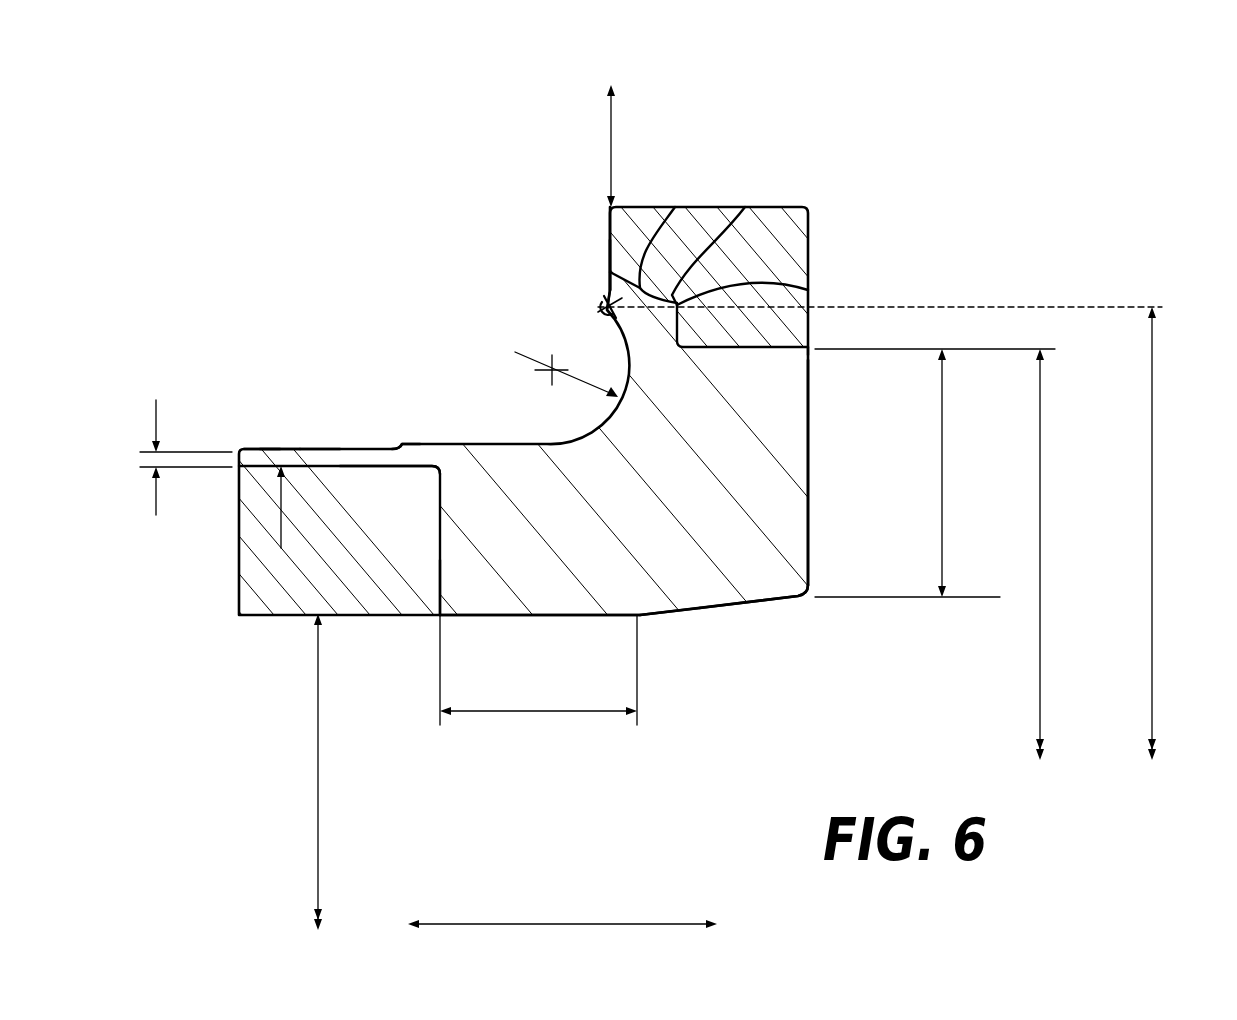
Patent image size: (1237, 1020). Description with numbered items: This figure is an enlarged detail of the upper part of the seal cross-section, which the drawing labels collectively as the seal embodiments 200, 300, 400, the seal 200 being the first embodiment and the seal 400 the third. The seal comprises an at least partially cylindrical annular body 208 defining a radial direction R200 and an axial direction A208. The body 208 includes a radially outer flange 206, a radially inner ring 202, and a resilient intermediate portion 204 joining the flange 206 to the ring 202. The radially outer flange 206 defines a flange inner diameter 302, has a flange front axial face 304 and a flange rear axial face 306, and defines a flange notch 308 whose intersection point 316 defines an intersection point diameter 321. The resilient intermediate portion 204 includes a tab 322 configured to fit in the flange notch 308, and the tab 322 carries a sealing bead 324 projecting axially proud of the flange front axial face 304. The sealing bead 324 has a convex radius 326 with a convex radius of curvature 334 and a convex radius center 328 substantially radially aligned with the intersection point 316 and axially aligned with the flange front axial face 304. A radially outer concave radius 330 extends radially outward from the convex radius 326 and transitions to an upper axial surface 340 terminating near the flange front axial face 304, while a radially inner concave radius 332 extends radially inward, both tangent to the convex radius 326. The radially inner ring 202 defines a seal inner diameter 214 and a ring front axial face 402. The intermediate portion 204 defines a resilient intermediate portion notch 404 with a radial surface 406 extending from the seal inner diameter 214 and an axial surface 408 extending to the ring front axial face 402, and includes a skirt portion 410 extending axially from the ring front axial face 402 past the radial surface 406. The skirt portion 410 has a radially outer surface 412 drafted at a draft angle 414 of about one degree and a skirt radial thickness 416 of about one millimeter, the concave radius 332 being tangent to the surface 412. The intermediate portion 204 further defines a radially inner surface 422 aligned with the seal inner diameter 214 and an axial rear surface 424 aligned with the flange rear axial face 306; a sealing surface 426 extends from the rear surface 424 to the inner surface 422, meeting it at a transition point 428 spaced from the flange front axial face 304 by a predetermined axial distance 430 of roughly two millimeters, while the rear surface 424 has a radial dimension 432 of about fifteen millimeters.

The seal 200 is at (575, 314).
The seal 300 is at (575, 314).
The seal 400 is at (736, 80).
The radially inner ring 202 is at (283, 598).
The resilient intermediate portion 204 is at (525, 596).
The radially outer flange 206 is at (795, 240).
The at least partially cylindrical annular body 208 is at (815, 183).
The seal inner diameter 214 is at (318, 790).
The flange inner diameter 302 is at (1040, 548).
The flange front axial face 304 is at (608, 228).
The flange rear axial face 306 is at (810, 265).
The flange notch 308 is at (745, 207).
The intersection point 316 is at (808, 290).
The intersection point diameter 321 is at (1152, 518).
The tab 322 is at (675, 207).
The sealing bead 324 is at (600, 312).
The convex radius 326 is at (600, 300).
The convex radius center 328 is at (600, 332).
The radially outer concave radius 330 is at (607, 278).
The radially inner concave radius 332 is at (535, 370).
The convex radius of curvature 334 is at (600, 306).
The upper axial surface 340 is at (605, 247).
The ring front axial face 402 is at (243, 548).
The resilient intermediate portion notch 404 is at (357, 466).
The radial surface 406 is at (448, 592).
The axial surface 408 is at (400, 448).
The skirt portion 410 is at (320, 448).
The radially outer surface 412 is at (300, 448).
The draft angle 414 is at (280, 450).
The skirt radial thickness 416 is at (156, 413).
The resilient intermediate portion radially inner surface 422 is at (583, 612).
The resilient intermediate portion axial rear surface 424 is at (808, 528).
The sealing surface 426 is at (775, 600).
The transition point 428 is at (640, 615).
The predetermined axial distance 430 is at (590, 712).
The radial dimension 432 is at (942, 478).
The axis of rotation R200 is at (612, 143).
The axial direction A208 is at (565, 922).